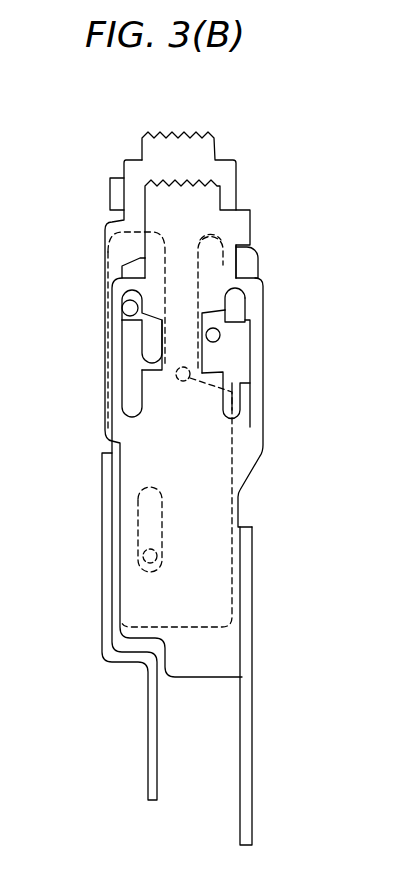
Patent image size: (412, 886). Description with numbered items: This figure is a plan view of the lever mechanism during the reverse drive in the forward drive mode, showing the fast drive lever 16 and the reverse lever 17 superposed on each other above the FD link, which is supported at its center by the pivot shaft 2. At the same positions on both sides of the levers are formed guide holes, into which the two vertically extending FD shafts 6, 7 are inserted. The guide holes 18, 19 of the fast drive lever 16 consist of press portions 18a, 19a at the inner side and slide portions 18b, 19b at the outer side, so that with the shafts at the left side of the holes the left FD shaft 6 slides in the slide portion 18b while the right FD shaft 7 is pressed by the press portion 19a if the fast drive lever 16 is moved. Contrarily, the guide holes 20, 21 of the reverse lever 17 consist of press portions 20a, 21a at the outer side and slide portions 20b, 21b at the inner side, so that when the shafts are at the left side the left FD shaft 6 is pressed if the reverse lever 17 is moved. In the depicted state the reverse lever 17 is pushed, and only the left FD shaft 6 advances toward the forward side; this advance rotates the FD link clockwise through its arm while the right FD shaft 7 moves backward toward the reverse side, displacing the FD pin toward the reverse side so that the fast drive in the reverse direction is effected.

The pivot shaft 2 is at (190, 380).
The FD shaft 6 is at (122, 308).
The FD shaft 7 is at (218, 337).
The fast drive lever 16 is at (252, 710).
The reverse lever 17 is at (148, 706).
The guide hole 18 is at (133, 405).
The press portion 18a is at (150, 325).
The slide portion 18b is at (130, 378).
The guide hole 19 is at (238, 410).
The press portion 19a is at (210, 353).
The slide portion 19b is at (233, 300).
The guide hole 20 is at (106, 280).
The press portion 20a is at (124, 263).
The slide portion 20b is at (148, 245).
The guide hole 21 is at (218, 267).
The press portion 21a is at (257, 262).
The slide portion 21b is at (215, 236).